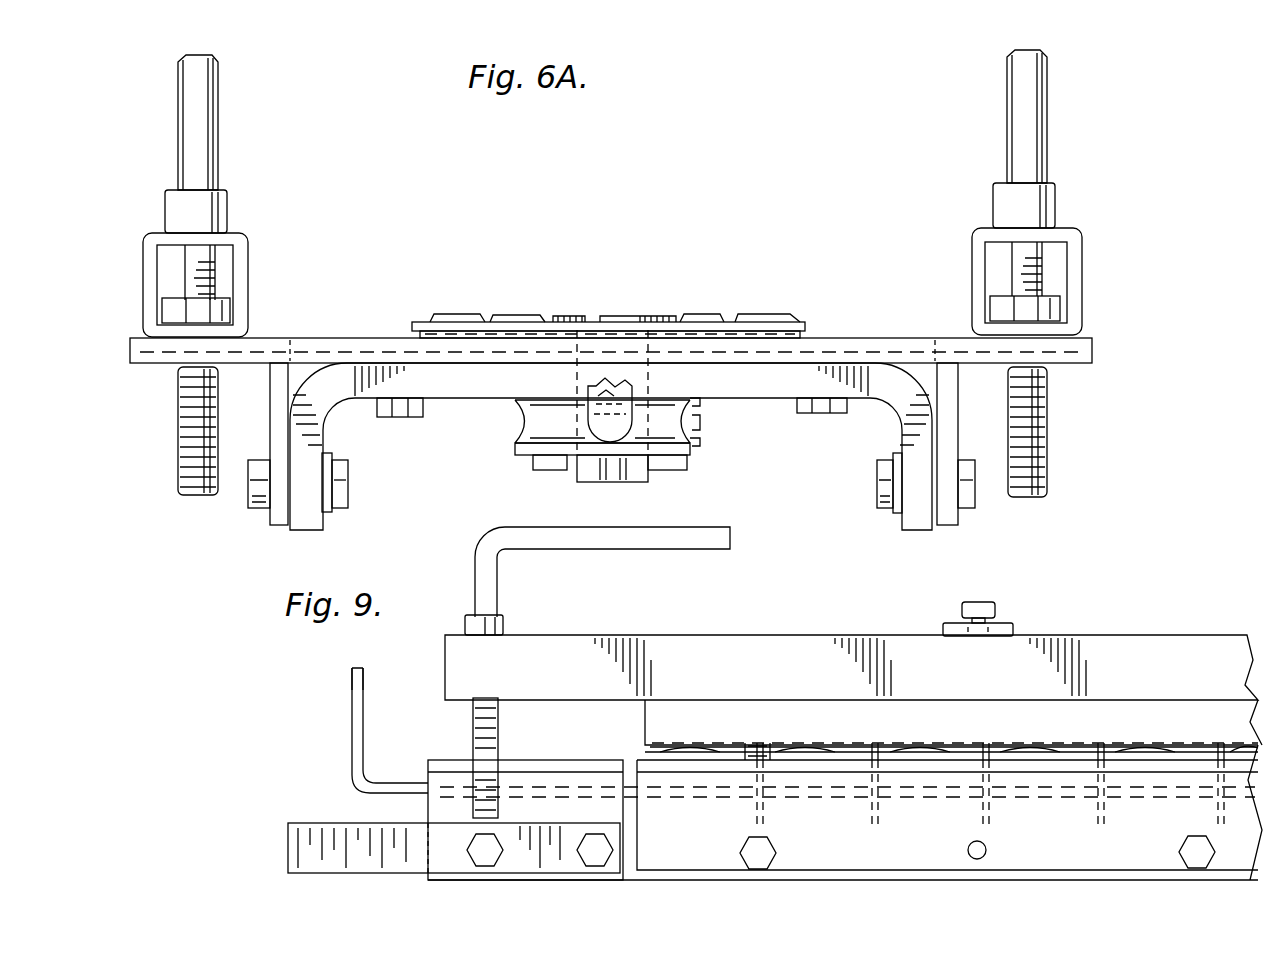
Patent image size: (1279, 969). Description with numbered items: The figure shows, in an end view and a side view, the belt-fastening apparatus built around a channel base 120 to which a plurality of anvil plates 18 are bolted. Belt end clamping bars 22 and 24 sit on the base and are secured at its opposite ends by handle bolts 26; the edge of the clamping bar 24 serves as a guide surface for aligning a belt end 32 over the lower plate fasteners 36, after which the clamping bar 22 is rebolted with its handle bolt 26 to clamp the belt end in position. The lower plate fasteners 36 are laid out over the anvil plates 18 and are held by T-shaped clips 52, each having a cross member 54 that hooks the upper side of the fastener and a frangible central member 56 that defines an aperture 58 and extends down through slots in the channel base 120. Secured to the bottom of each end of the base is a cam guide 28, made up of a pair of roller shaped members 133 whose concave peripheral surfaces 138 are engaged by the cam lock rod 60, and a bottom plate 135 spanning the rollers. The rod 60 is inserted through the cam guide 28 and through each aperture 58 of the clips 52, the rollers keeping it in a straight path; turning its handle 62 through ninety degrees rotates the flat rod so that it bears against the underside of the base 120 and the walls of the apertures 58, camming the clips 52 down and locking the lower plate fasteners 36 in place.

In FIG. 6A, the anvil plate 18 is at (855, 360).
In FIG. 6A, the belt end clamping bar 22 is at (1076, 272).
In FIG. 9, the belt end clamping bar 22 is at (1100, 650).
In FIG. 6A, the belt end clamping bar 24 is at (250, 240).
In FIG. 9, the handle bolt 26 is at (685, 527).
In FIG. 6A, the cam guide 28 is at (508, 448).
In FIG. 9, the belt end 32 is at (1200, 716).
In FIG. 6A, the lower plate fastener 36 is at (800, 325).
In FIG. 9, the lower plate fastener 36 is at (1140, 745).
In FIG. 6A, the T-shaped lower plate fastener clip 52 is at (622, 320).
In FIG. 9, the T-shaped lower plate fastener clip 52 is at (755, 810).
In FIG. 6A, the cross member 54 is at (566, 320).
In FIG. 9, the cross member 54 is at (758, 745).
In FIG. 6A, the frangible central member 56 is at (598, 472).
In FIG. 9, the frangible central member 56 is at (766, 828).
In FIG. 6A, the aperture 58 is at (632, 392).
In FIG. 6A, the cam lock rod 60 is at (584, 392).
In FIG. 9, the cam lock rod 60 is at (352, 750).
In FIG. 9, the handle 62 is at (355, 672).
In FIG. 6A, the channel base 120 is at (792, 382).
In FIG. 6A, the roller shaped member 133 is at (703, 408).
In FIG. 6A, the bottom plate 135 is at (703, 450).
In FIG. 6A, the concave peripheral surface 138 is at (703, 432).